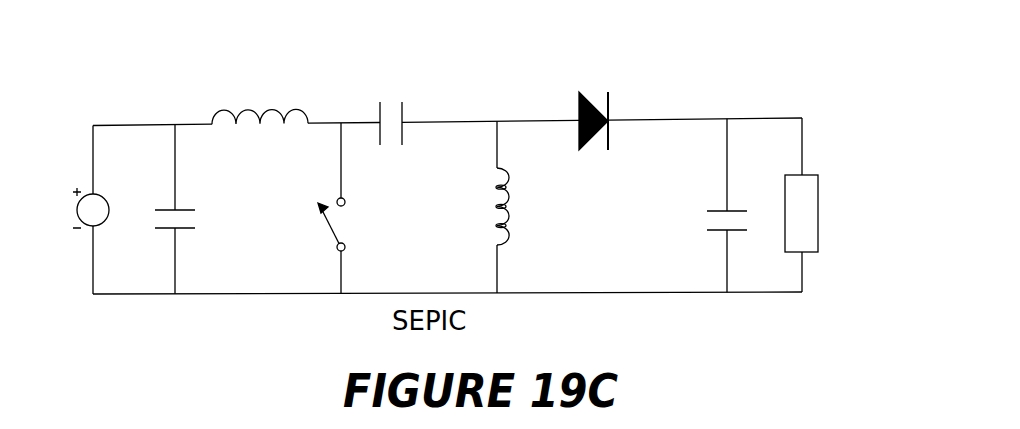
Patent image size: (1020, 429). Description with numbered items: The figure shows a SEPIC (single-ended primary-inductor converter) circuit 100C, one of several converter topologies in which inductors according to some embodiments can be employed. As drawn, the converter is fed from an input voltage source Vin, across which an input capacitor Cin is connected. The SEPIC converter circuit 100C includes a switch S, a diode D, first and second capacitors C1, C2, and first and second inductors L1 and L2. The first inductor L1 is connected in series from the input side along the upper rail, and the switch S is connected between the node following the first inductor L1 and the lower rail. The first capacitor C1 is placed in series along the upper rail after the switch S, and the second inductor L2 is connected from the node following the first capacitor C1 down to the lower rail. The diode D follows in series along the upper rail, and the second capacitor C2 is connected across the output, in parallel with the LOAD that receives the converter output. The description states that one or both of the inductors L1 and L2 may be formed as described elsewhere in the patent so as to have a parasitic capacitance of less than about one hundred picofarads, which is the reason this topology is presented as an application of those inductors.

The SEPIC converter circuit 100C is at (465, 162).
The input voltage source Vin is at (73, 210).
The input capacitor Cin is at (165, 209).
The first inductor L1 is at (260, 101).
The switch S is at (308, 208).
The first capacitor C1 is at (410, 115).
The second inductor L2 is at (519, 207).
The diode D is at (593, 101).
The second capacitor C2 is at (707, 205).
The load LOAD is at (839, 205).